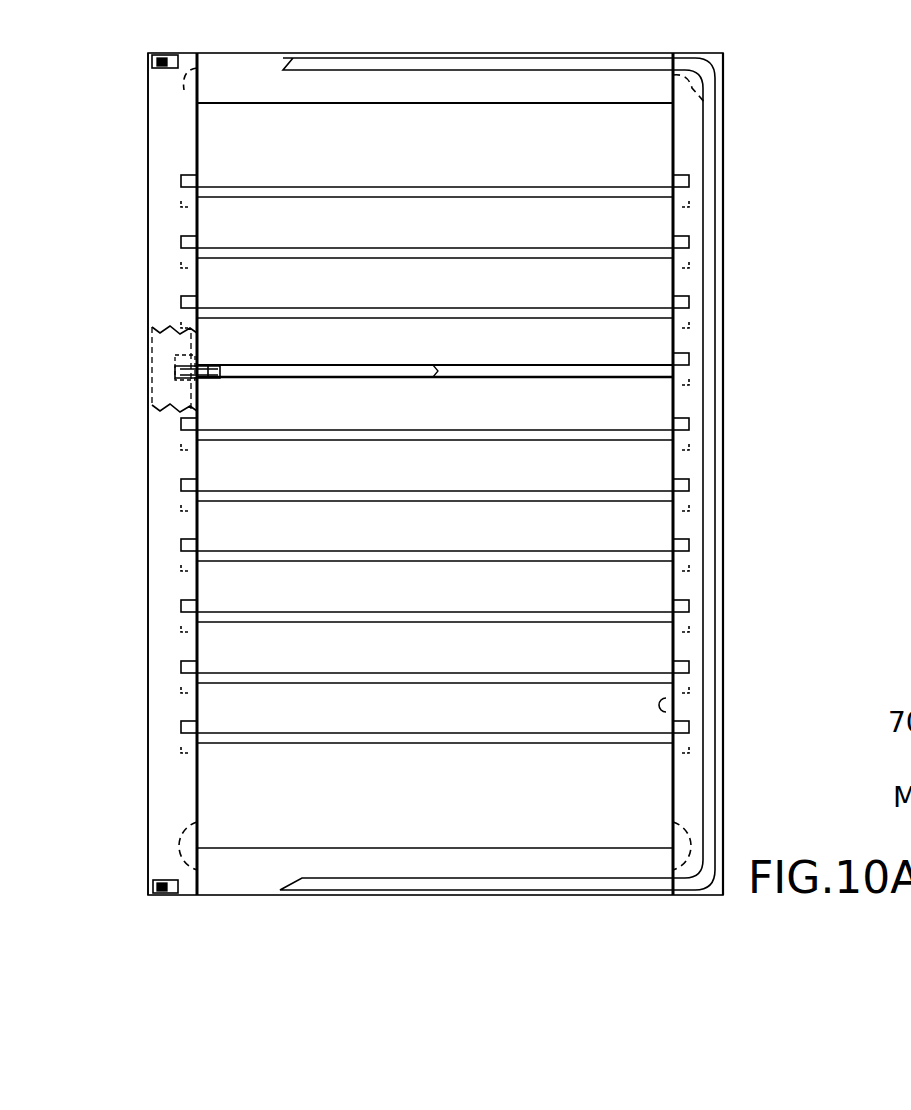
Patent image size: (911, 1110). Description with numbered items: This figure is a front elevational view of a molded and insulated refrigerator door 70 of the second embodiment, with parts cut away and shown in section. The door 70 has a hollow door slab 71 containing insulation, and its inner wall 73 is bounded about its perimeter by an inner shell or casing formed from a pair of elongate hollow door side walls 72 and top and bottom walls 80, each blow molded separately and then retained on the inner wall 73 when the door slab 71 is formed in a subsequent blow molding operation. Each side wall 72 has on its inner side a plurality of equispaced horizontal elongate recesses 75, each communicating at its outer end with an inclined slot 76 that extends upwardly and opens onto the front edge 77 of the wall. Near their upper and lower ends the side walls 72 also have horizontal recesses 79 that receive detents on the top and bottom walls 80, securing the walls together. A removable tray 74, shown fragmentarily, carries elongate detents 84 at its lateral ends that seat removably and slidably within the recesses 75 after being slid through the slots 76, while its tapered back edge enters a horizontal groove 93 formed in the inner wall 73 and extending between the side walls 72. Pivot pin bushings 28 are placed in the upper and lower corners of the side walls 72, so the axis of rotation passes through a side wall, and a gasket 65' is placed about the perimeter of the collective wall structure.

The pivot pin bushing 28 is at (152, 62).
The gasket 65' is at (497, 474).
The refrigerator door 70 is at (727, 191).
The door slab 71 is at (628, 775).
The door side wall 72 is at (148, 740).
The inner wall 73 is at (408, 838).
The tray 74 is at (370, 376).
The recess 75 is at (192, 376).
The inclined slot 76 is at (690, 242).
The front edge 77 is at (175, 633).
The recess 79 is at (182, 88).
The top and bottom wall 80 is at (523, 92).
The detent 84 is at (176, 360).
The groove 93 is at (433, 257).